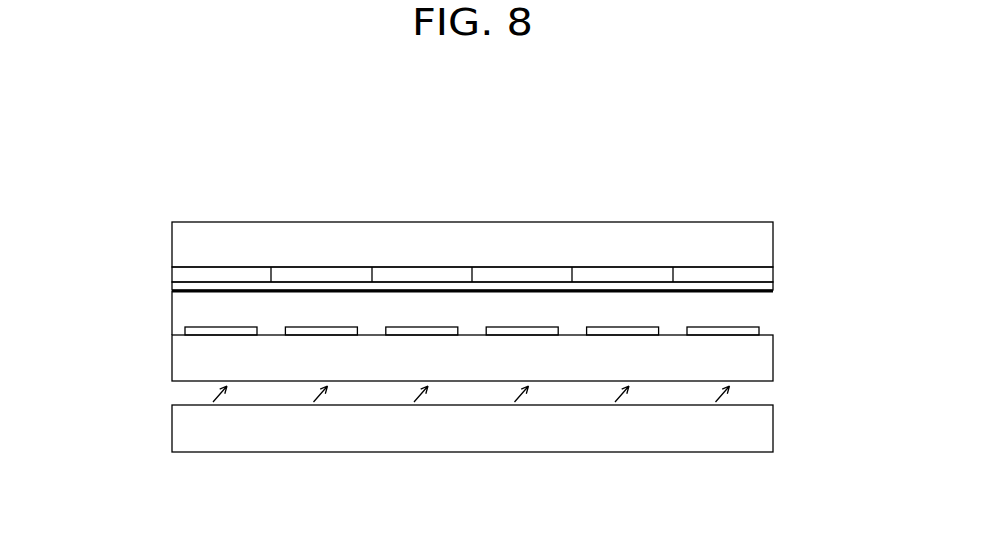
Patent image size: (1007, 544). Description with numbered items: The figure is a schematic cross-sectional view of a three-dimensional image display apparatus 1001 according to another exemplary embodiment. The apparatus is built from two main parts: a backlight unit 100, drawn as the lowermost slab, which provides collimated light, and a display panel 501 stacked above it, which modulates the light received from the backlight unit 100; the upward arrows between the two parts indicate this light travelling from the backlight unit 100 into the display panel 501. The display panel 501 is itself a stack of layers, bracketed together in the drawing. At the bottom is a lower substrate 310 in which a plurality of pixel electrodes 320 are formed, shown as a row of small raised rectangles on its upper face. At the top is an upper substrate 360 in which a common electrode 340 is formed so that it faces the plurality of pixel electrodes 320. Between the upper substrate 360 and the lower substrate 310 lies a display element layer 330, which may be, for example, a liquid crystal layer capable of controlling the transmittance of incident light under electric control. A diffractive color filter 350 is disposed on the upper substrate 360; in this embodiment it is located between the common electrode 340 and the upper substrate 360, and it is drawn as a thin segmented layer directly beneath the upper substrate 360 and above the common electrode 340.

The 3D image display apparatus 1001 is at (772, 185).
The display panel 501 is at (85, 222).
The upper substrate 360 is at (173, 248).
The diffractive color filter 350 is at (173, 270).
The common electrode 340 is at (173, 285).
The display element layer 330 is at (173, 312).
The pixel electrodes 320 is at (185, 332).
The lower substrate 310 is at (173, 360).
The backlight unit 100 is at (172, 428).